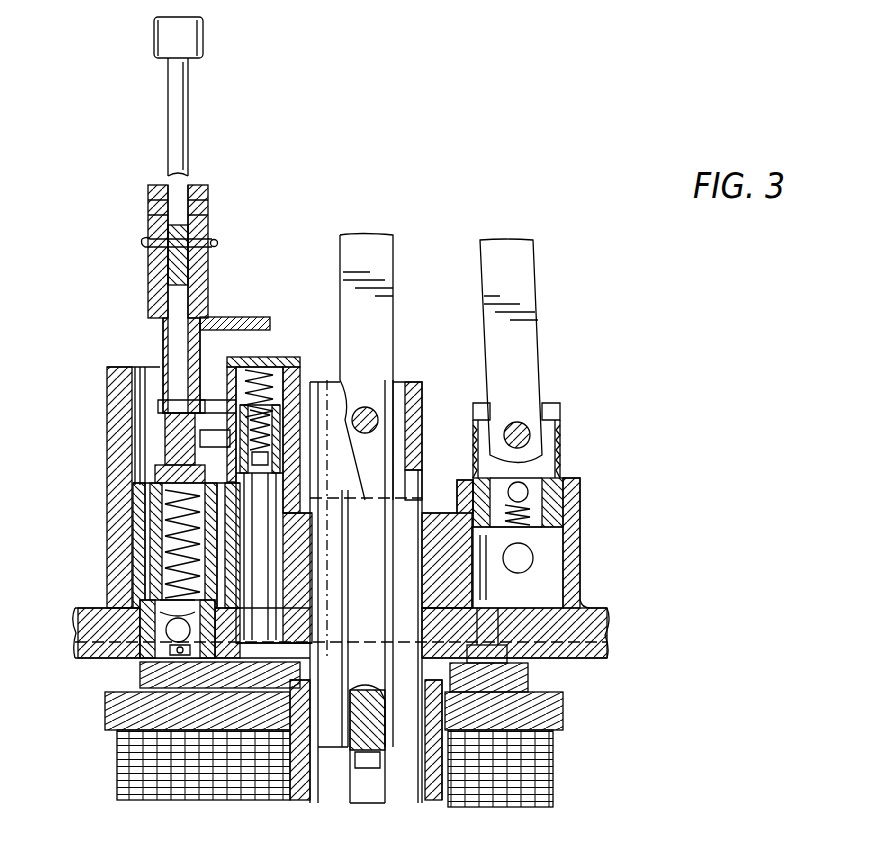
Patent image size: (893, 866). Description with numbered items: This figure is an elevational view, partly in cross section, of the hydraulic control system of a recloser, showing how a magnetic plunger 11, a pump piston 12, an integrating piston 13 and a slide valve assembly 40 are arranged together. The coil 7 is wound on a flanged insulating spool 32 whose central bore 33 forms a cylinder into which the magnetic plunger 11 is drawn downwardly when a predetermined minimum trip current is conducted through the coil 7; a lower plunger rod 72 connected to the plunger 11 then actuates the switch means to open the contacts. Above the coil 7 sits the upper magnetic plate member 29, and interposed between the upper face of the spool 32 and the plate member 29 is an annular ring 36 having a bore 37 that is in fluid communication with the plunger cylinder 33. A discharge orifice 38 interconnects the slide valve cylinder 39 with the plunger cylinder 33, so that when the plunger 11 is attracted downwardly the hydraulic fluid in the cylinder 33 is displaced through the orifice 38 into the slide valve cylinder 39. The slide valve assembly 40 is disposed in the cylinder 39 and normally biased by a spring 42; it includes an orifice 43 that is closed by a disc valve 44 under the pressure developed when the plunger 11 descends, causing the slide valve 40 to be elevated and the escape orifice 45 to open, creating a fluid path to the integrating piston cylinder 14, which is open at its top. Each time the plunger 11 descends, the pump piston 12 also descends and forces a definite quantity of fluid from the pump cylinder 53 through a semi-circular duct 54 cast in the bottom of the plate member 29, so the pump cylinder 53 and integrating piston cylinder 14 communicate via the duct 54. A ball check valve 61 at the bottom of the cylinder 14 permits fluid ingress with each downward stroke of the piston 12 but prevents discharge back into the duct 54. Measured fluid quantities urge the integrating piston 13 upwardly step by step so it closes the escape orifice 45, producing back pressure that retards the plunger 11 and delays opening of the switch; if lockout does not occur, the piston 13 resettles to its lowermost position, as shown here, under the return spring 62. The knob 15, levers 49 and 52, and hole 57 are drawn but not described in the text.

The coil 7 is at (120, 776).
The magnetic plunger 11 is at (378, 575).
The pump piston 12 is at (561, 396).
The integrating piston 13 is at (155, 503).
The integrating piston cylinder 14 is at (143, 449).
The knob 15 is at (154, 40).
The upper magnetic plate member 29 is at (600, 625).
The flanged insulating spool 32 is at (110, 710).
The central bore 33 is at (305, 795).
The annular ring 36 is at (520, 680).
The bore 37 is at (140, 675).
The discharge orifice 38 is at (305, 643).
The slide valve cylinder 39 is at (272, 577).
The slide valve assembly 40 is at (243, 412).
The spring 42 is at (276, 377).
The orifice 43 is at (265, 476).
The disc valve 44 is at (266, 482).
The escape orifice 45 is at (228, 445).
The lever 49 is at (383, 262).
The lever 52 is at (525, 268).
The pump cylinder 53 is at (558, 535).
The semi-circular duct 54 is at (500, 655).
The hole 57 is at (525, 562).
The ball check valve 61 is at (155, 602).
The return spring 62 is at (165, 549).
The lower plunger rod 72 is at (374, 790).